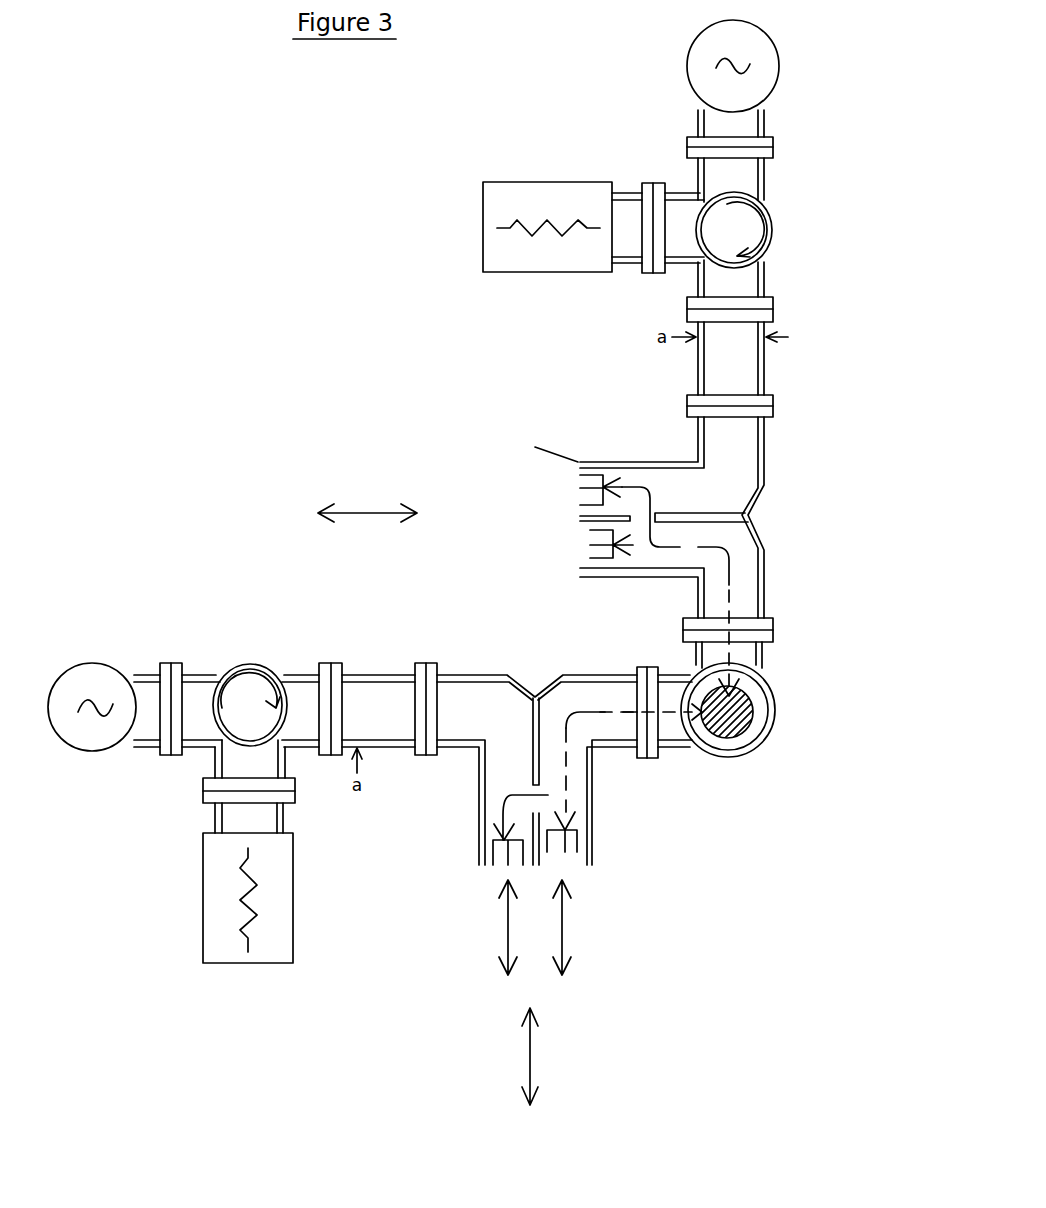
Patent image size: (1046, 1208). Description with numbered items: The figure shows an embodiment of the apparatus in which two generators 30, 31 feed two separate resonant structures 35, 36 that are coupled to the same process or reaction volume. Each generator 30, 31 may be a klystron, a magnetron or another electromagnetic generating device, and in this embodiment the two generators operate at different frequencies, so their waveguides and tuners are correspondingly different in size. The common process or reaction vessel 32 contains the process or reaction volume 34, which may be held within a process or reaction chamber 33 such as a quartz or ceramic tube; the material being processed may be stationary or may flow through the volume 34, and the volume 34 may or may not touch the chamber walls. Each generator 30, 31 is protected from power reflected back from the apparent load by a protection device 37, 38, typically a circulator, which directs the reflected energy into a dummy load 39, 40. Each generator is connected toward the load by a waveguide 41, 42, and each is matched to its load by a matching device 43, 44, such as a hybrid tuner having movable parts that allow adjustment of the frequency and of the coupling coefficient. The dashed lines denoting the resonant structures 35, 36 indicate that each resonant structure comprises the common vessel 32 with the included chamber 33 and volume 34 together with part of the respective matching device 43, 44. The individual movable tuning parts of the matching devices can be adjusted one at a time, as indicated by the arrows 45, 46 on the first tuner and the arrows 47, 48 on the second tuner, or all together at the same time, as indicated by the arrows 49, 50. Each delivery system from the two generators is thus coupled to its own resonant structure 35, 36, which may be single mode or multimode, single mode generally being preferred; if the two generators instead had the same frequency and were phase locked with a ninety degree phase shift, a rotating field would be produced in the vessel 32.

The generator 30 is at (781, 47).
The generator 31 is at (87, 753).
The process or reaction vessel 32 is at (748, 755).
The process or reaction chamber 33 is at (767, 700).
The process or reaction volume 34 is at (725, 727).
The resonant structure 35 is at (729, 582).
The resonant structure 36 is at (587, 710).
The protection device 37 is at (778, 180).
The protection device 38 is at (227, 672).
The dummy load 39 is at (532, 272).
The dummy load 40 is at (203, 915).
The waveguide 41 is at (778, 376).
The waveguide 42 is at (363, 662).
The matching device 43 is at (778, 463).
The matching device 44 is at (478, 803).
The arrow 45 is at (468, 490).
The arrow 46 is at (468, 545).
The arrow 47 is at (514, 885).
The arrow 48 is at (569, 893).
The arrow 49 is at (367, 507).
The arrow 50 is at (548, 1056).